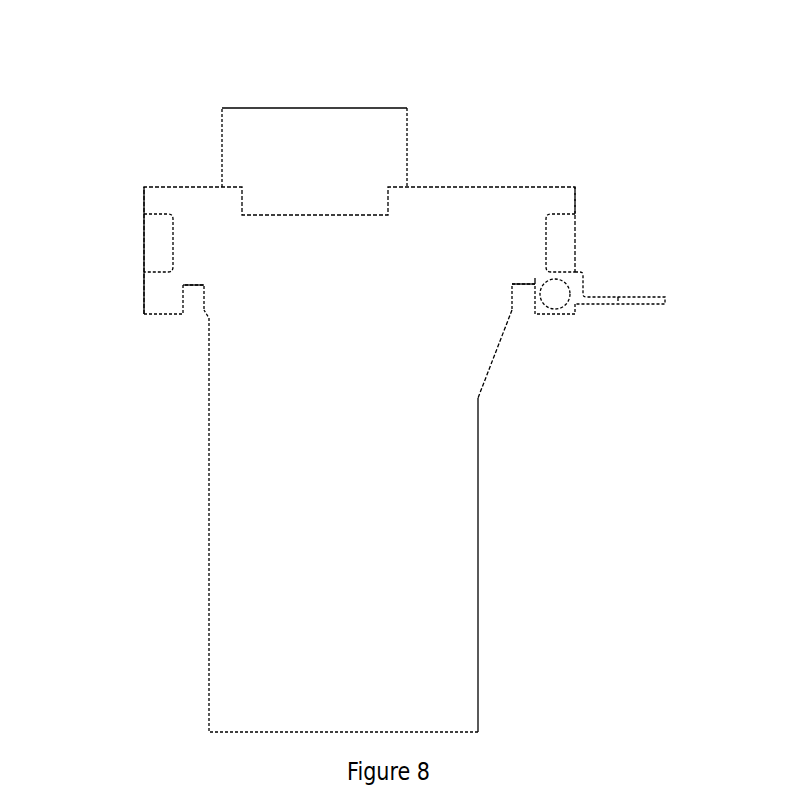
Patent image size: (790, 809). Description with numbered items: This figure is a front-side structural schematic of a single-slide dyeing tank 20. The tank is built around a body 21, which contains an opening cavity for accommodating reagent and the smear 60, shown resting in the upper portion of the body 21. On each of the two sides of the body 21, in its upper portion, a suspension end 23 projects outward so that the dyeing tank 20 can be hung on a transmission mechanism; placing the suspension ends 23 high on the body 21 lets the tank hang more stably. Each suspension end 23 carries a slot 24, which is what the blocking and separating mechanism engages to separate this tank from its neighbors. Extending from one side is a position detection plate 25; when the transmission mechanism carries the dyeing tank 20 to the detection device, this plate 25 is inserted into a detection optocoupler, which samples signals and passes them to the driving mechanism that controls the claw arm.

The single-slide dyeing tank 20 is at (168, 475).
The body 21 is at (414, 500).
The suspension end 23 is at (155, 306).
The slot 24 is at (136, 233).
The position detection plate 25 is at (640, 303).
The smear 60 is at (356, 135).